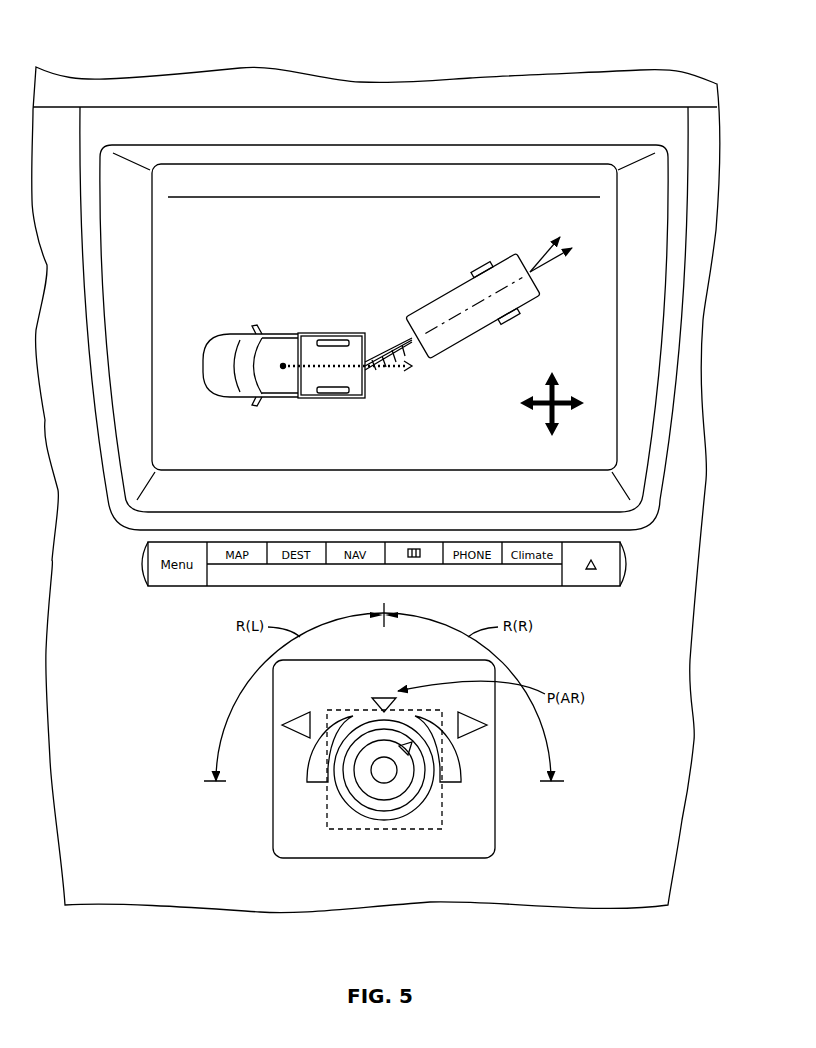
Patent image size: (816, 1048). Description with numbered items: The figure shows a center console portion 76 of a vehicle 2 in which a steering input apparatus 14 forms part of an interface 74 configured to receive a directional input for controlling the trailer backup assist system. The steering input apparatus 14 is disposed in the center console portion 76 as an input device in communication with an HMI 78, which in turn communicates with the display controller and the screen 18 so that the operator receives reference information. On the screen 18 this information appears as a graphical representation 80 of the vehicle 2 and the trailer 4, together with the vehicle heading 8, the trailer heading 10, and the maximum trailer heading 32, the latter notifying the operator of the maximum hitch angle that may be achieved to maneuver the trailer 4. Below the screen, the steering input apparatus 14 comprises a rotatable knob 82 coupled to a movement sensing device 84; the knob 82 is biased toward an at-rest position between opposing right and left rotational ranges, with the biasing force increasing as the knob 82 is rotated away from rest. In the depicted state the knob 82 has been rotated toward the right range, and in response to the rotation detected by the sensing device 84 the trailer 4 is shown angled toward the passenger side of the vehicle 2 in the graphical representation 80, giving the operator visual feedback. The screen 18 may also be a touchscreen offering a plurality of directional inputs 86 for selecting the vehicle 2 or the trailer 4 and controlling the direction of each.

The vehicle 2 is at (231, 329).
The trailer 4 is at (421, 301).
The vehicle heading 8 is at (394, 371).
The trailer heading 10 is at (545, 264).
The steering input apparatus 14 is at (425, 773).
The screen 18 is at (592, 215).
The maximum trailer heading 32 is at (542, 262).
The interface 74 is at (625, 52).
The center console portion 76 is at (123, 55).
The HMI 78 is at (125, 351).
The graphical representation 80 is at (278, 296).
The knob 82 is at (388, 802).
The movement sensing device 84 is at (442, 808).
The directional inputs 86 is at (529, 383).